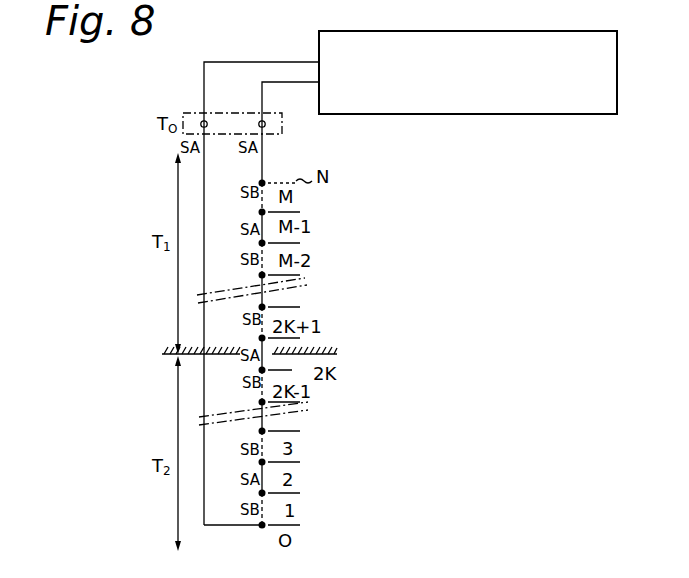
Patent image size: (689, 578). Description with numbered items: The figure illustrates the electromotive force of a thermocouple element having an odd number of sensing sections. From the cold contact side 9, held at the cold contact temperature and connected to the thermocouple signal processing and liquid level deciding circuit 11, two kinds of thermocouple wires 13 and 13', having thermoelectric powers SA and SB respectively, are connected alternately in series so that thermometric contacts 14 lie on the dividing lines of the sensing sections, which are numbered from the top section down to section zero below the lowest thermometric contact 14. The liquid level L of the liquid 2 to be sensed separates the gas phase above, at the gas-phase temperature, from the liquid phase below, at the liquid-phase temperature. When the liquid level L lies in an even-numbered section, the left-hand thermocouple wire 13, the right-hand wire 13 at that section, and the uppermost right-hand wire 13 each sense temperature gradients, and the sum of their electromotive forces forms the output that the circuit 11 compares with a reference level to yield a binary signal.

The thermocouple signal processing and liquid level deciding circuit 11 is at (447, 28).
The cold contact side 9 is at (284, 116).
The thermocouple wire 13 is at (251, 295).
The thermocouple wire 13' is at (236, 354).
The thermometric contact 14 is at (262, 529).
The liquid 2 is at (337, 356).
The liquid level L is at (333, 350).